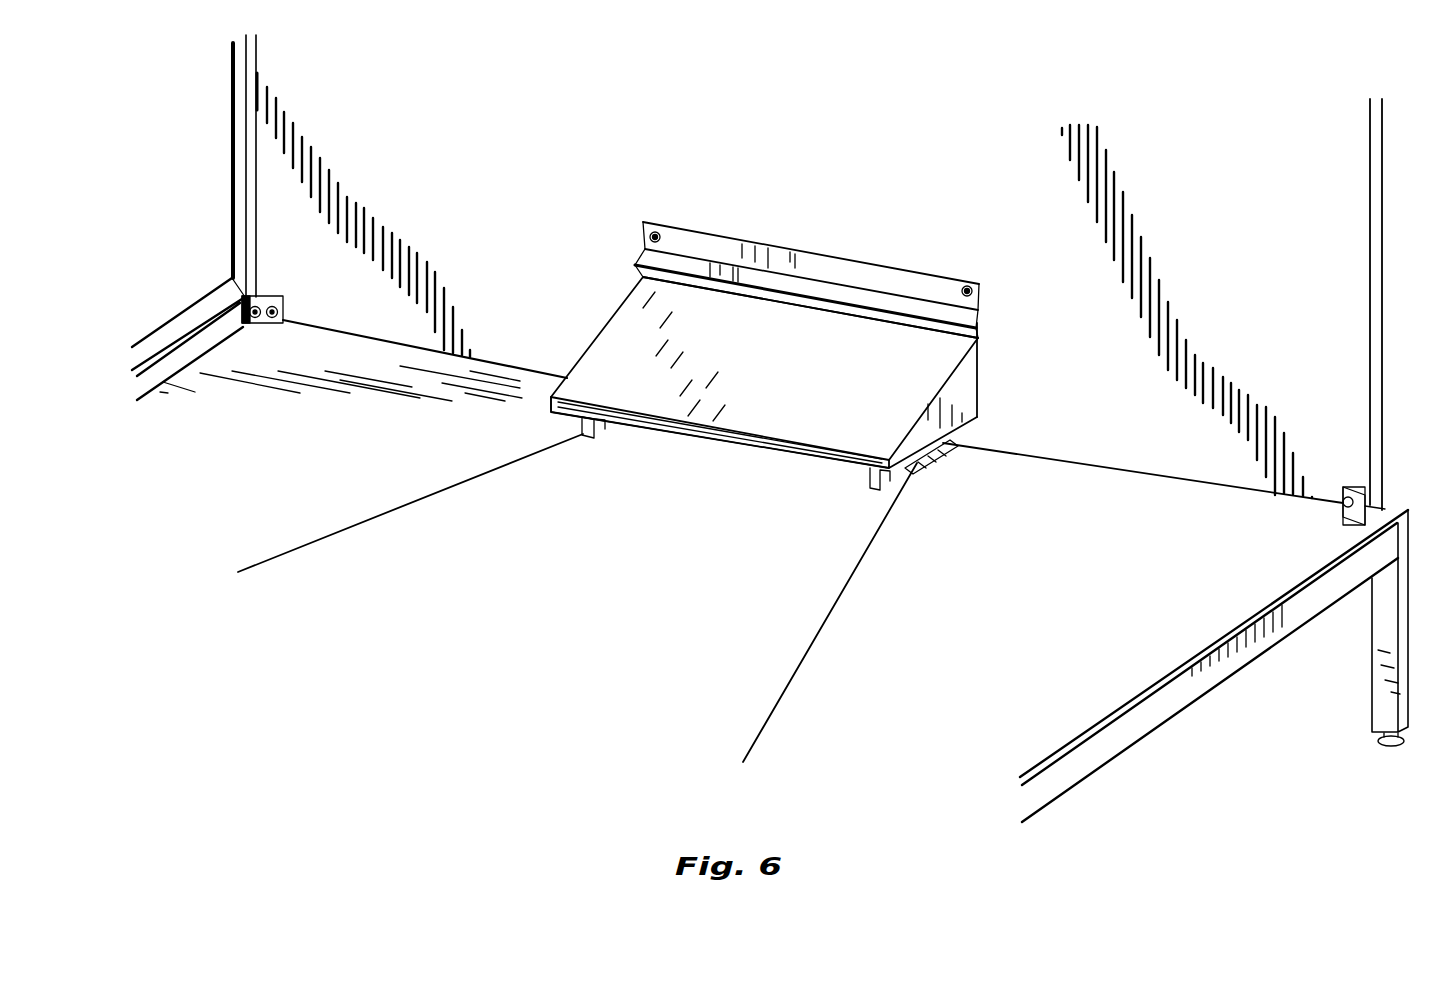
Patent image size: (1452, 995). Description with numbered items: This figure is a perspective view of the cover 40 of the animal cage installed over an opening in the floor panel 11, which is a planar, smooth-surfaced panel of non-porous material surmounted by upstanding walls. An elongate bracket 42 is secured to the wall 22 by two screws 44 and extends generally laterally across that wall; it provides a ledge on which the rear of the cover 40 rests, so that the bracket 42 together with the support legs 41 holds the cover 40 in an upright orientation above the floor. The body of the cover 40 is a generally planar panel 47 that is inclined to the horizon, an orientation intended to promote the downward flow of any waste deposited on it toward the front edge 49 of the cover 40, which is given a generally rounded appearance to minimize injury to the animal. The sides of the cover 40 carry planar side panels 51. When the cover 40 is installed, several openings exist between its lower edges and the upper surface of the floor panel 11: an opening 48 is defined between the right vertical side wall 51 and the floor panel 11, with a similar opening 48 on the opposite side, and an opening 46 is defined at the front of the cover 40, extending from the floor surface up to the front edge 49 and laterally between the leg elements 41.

The floor panel 11 is at (751, 564).
The wall 22 is at (1222, 304).
The cover 40 is at (795, 351).
The support legs 41 is at (607, 425).
The bracket 42 is at (835, 262).
The screws 44 is at (656, 231).
The opening 46 is at (722, 452).
The panel 47 is at (628, 357).
The opening 48 is at (935, 452).
The front edge 49 is at (785, 450).
The side panels 51 is at (962, 390).